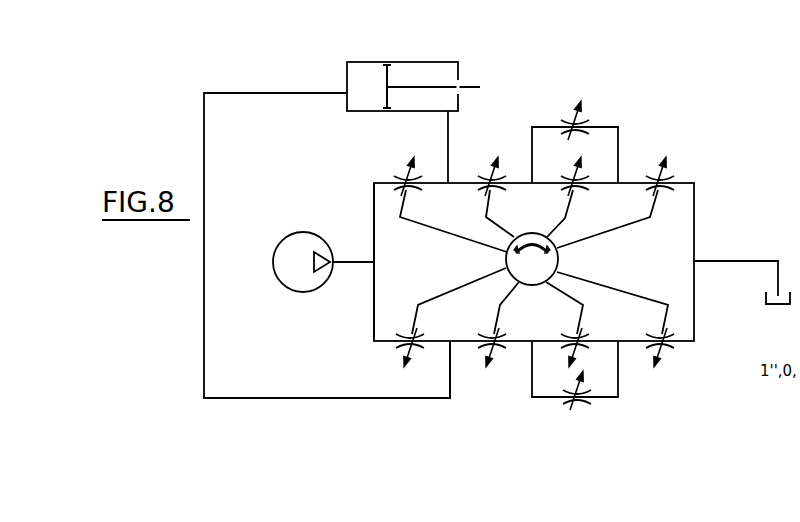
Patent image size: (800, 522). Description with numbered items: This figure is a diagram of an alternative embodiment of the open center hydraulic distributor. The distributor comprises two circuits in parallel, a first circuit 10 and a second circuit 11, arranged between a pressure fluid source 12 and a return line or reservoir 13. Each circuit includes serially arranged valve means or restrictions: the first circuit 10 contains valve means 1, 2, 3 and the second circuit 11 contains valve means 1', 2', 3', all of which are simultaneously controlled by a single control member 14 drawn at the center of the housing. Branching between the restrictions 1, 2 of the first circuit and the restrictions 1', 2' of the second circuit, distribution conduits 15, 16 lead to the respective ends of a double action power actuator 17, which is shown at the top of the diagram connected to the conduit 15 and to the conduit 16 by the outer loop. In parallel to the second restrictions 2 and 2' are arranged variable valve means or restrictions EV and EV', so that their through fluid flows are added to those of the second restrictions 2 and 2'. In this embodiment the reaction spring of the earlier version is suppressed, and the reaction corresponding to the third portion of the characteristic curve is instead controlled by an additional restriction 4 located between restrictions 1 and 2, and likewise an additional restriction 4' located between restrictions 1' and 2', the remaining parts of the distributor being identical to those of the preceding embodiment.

The first valve means 1 is at (407, 176).
The second restriction 2 is at (573, 176).
The third valve means 3 is at (664, 176).
The additional restriction 4 is at (490, 176).
The first valve means 1' is at (403, 352).
The second restriction 2' is at (581, 348).
The third valve means 3' is at (666, 348).
The additional restriction 4' is at (491, 340).
The variable valve means EV is at (569, 117).
The variable valve means EV' is at (582, 398).
The first circuit 10 is at (363, 222).
The second circuit 11 is at (363, 301).
The pressure fluid source 12 is at (303, 262).
The return line or reservoir 13 is at (742, 282).
The control member 14 is at (532, 259).
The distribution conduit 15 is at (460, 147).
The distribution conduit 16 is at (339, 369).
The hydraulic cylinder 17 is at (413, 76).